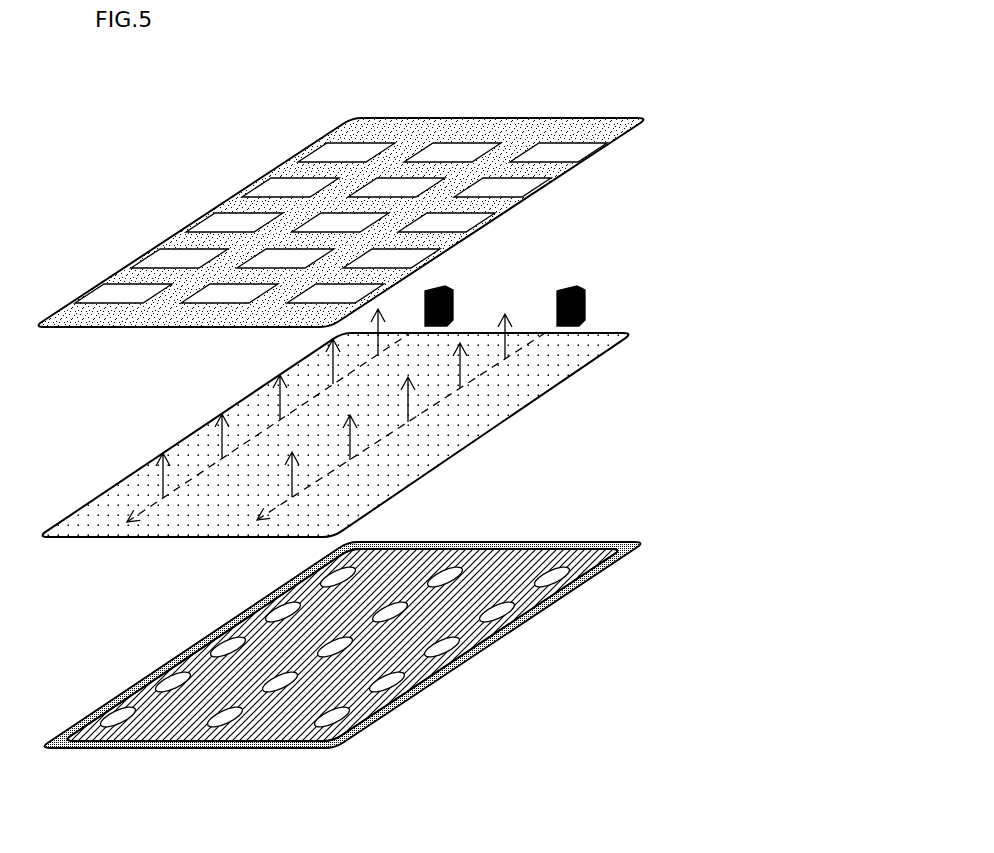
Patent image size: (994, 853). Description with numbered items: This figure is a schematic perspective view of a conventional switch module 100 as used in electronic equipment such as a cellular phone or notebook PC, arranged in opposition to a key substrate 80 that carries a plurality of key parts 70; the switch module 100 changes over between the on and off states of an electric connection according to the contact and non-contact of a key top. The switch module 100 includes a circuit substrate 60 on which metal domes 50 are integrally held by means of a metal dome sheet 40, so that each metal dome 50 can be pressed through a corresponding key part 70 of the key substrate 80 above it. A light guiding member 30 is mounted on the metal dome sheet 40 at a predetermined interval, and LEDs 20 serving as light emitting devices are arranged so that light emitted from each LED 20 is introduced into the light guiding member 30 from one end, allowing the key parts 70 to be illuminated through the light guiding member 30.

The LED 20 is at (452, 302).
The light guiding member 30 is at (497, 412).
The metal dome sheet 40 is at (503, 637).
The metal dome 50 is at (560, 578).
The circuit substrate 60 is at (632, 546).
The key part 70 is at (570, 153).
The key substrate 80 is at (612, 123).
The switch module 100 is at (778, 333).